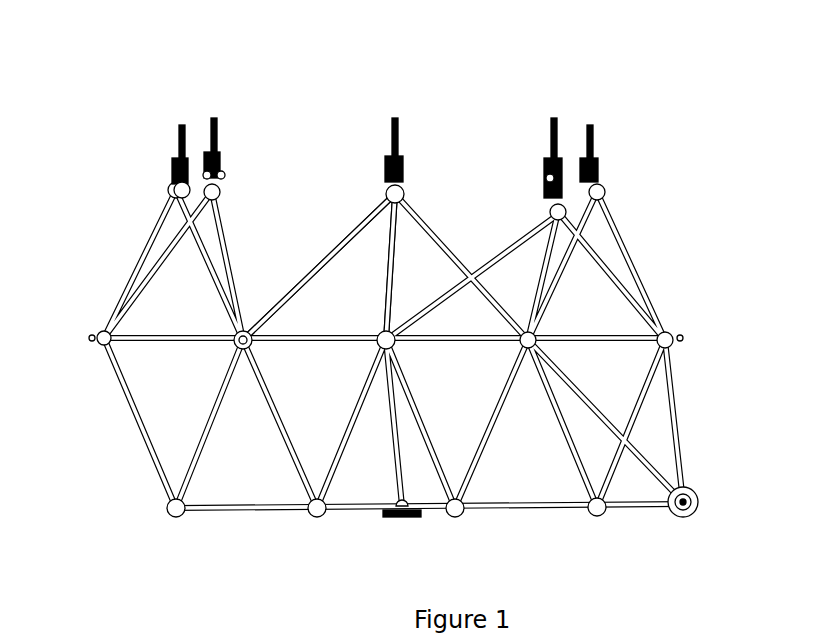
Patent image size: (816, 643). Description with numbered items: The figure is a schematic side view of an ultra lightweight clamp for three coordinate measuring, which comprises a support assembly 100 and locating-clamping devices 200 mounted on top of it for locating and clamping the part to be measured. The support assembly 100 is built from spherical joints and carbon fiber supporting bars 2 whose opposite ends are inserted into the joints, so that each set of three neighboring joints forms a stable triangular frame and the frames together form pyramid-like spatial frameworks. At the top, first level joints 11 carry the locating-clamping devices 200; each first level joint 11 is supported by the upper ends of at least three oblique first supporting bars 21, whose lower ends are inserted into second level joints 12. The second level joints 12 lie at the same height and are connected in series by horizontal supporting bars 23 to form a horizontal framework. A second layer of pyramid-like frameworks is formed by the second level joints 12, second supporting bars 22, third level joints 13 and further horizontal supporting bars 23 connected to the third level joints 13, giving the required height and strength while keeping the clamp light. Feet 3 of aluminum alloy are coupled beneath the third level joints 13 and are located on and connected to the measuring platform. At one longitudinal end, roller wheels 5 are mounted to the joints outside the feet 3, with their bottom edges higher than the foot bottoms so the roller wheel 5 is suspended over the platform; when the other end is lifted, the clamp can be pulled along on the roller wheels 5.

The support assembly 100 is at (123, 220).
The locating-clamping devices 200 is at (222, 122).
The supporting bar 2 is at (340, 217).
The first level joint 11 is at (384, 190).
The second level joint 12 is at (246, 328).
The third level joint 13 is at (312, 520).
The first supporting bar 21 is at (326, 249).
The second supporting bar 22 is at (336, 445).
The horizontal supporting bar 23 is at (316, 330).
The foot 3 is at (380, 524).
The roller wheel 5 is at (690, 518).